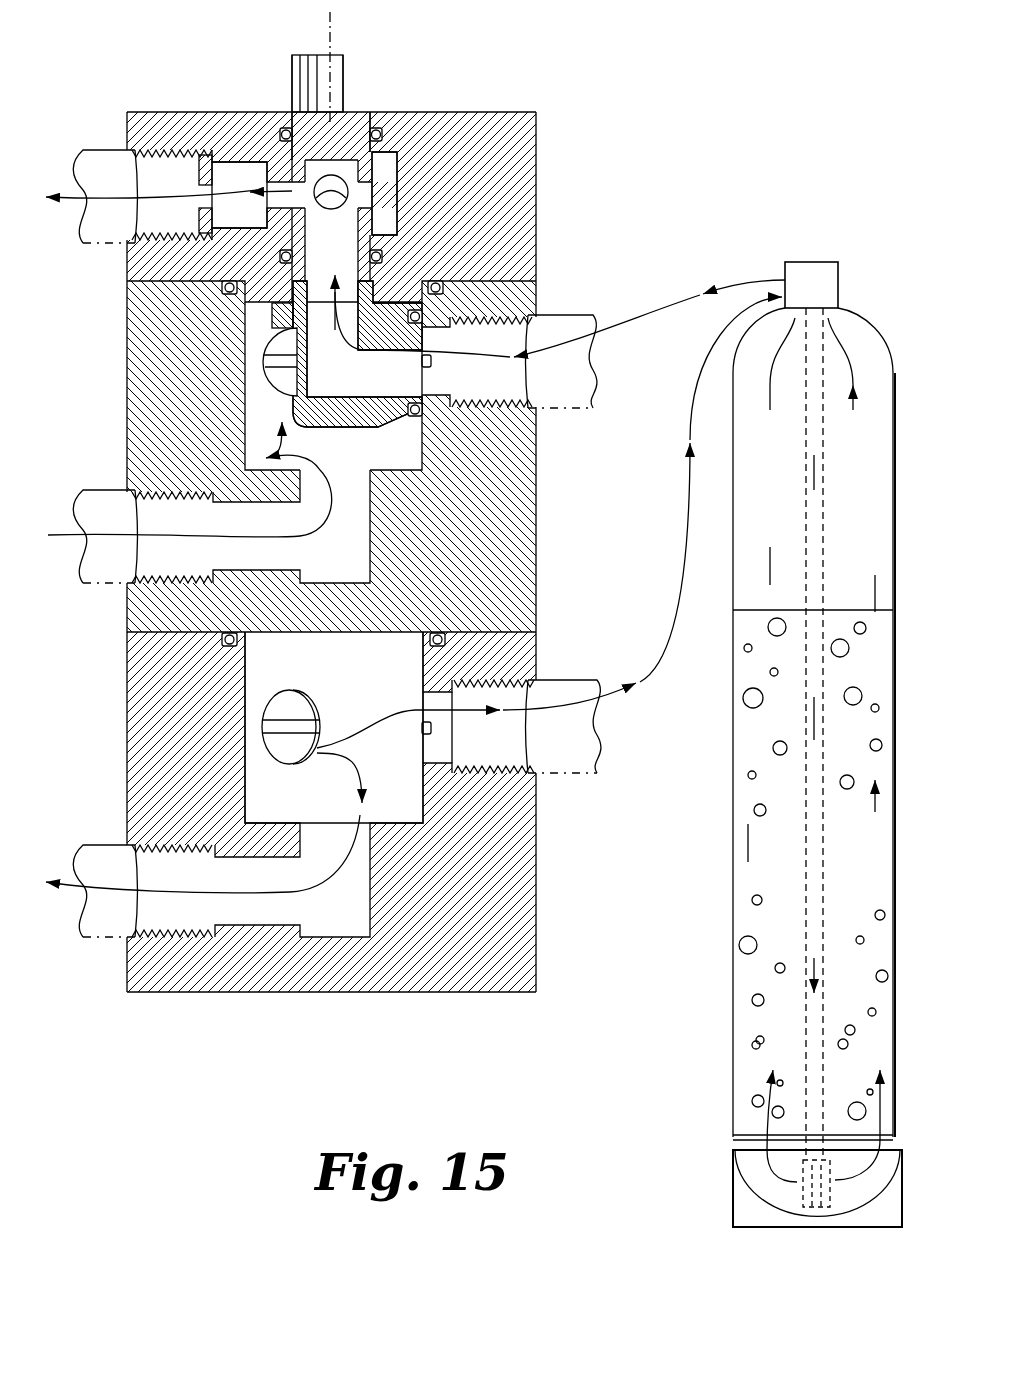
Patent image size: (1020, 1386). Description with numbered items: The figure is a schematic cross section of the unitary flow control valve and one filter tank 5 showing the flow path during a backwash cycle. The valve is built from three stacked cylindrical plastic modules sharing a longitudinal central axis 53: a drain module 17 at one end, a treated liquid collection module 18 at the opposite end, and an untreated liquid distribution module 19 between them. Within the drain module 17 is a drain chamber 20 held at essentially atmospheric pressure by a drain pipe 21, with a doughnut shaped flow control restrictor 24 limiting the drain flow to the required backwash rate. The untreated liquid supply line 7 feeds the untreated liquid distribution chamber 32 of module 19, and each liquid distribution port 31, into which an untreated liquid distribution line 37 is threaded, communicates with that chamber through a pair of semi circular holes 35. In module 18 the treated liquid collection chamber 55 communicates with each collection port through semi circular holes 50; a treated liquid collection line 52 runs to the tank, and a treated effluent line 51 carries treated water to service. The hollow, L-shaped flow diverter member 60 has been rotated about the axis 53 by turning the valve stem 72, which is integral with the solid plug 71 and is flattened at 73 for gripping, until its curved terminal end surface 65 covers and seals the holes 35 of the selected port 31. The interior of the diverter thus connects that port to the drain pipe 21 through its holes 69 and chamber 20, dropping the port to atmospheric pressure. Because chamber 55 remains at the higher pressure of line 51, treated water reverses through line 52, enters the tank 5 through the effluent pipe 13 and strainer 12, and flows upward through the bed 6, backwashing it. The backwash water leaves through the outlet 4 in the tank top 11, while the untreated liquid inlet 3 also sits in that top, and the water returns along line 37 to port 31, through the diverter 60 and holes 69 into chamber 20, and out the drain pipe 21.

The valve stem 72 is at (302, 55).
The longitudinal central axis 53 is at (330, 30).
The flattened portion of stem 73 is at (343, 75).
The solid plug 71 is at (350, 132).
The drain module 17 is at (536, 112).
The flow diverter member 60 is at (370, 190).
The drain pipe 21 is at (97, 152).
The drain chamber 20 is at (280, 172).
The drain pipe flow control restrictor 24 is at (197, 218).
The holes in leg portion 69 is at (322, 208).
The liquid distribution port 31 is at (537, 317).
The untreated liquid distribution line 37 is at (597, 318).
The semi circular holes 35 is at (418, 350).
The untreated liquid distribution chamber 32 is at (332, 450).
The curved terminal end surface 65 is at (418, 428).
The untreated liquid supply line 7 is at (102, 490).
The untreated liquid distribution module 19 is at (536, 520).
The treated liquid collection chamber 55 is at (380, 684).
The semi circular holes 50 is at (433, 747).
The treated liquid collection line 52 is at (563, 773).
The treated effluent line 51 is at (128, 937).
The treated liquid collection module 18 is at (536, 992).
The top of tank 11 is at (797, 282).
The treated liquid outlet 4 is at (830, 275).
The untreated liquid inlet 3 is at (838, 308).
The effluent pipe 13 is at (817, 525).
The filter tank 5 is at (896, 555).
The bed 6 is at (748, 912).
The strainer 12 is at (805, 1190).